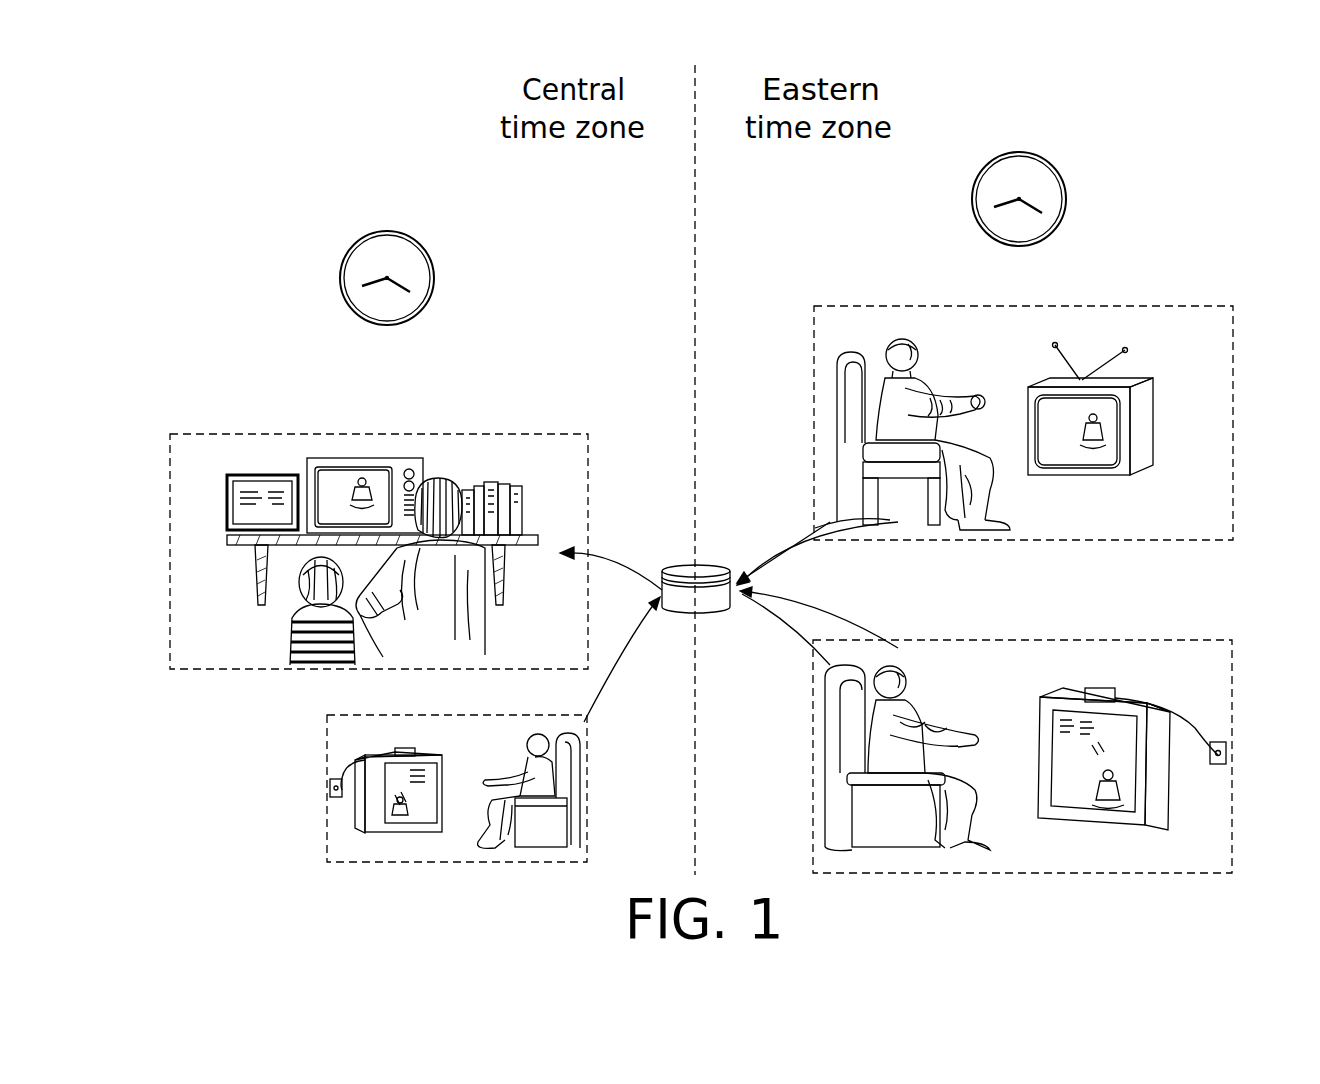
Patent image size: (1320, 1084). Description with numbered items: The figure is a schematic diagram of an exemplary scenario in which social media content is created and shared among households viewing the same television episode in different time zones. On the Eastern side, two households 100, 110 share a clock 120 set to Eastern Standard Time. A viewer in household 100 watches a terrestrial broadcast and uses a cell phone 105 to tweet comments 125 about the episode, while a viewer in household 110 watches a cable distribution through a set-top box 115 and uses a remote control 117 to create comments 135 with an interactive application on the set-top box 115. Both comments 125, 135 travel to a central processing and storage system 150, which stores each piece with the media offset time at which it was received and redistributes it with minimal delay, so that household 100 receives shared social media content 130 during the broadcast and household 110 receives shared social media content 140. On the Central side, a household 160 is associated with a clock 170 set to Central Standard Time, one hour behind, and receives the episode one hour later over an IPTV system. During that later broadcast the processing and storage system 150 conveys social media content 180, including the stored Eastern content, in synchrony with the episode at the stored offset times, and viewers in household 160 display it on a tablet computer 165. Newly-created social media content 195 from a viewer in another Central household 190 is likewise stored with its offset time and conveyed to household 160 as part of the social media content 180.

The household 100 is at (1166, 306).
The cell phone 105 is at (980, 398).
The household 110 is at (1165, 640).
The set-top box 115 is at (1108, 689).
The remote control 117 is at (976, 737).
The clock 120 is at (975, 209).
The comments 125 is at (857, 553).
The social media content 130 is at (778, 542).
The comments 135 is at (870, 627).
The social media content 140 is at (770, 666).
The processing and storage system 150 is at (673, 563).
The household 160 is at (206, 434).
The tablet computer 165 is at (284, 473).
The clock 170 is at (345, 298).
The social media content 180 is at (640, 593).
The household 190 is at (336, 713).
The social media content 195 is at (612, 668).